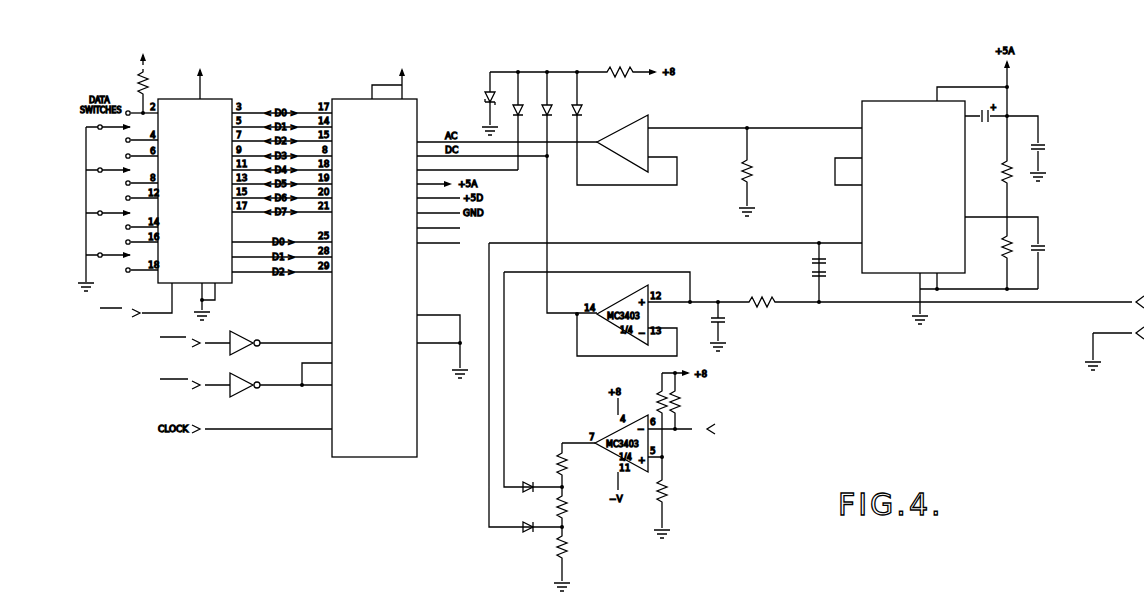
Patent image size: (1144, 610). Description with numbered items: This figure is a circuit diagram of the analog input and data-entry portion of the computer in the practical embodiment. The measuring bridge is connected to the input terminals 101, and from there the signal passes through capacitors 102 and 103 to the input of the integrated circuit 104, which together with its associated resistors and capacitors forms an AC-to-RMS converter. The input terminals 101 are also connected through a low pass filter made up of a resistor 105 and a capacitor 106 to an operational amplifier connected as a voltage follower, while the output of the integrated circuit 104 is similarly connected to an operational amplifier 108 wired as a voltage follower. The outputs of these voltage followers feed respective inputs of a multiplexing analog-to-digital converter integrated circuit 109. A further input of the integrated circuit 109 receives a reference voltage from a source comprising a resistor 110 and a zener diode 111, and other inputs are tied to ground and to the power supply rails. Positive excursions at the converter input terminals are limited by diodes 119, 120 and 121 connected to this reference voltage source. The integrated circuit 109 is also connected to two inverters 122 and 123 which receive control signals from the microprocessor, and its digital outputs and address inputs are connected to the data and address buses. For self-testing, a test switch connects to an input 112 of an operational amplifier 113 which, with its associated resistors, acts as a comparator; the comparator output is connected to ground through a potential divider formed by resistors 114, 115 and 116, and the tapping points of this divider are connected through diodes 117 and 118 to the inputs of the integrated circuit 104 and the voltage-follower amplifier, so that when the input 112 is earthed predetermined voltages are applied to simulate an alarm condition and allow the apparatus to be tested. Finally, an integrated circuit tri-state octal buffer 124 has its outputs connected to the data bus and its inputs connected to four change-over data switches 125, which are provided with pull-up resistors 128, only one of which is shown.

The input terminals 101 is at (1132, 330).
The capacitor 102 is at (812, 261).
The capacitor 103 is at (812, 276).
The integrated circuit 104 is at (891, 108).
The resistor 105 is at (772, 308).
The capacitor 106 is at (728, 325).
The operational amplifier 108 is at (629, 125).
The multiplexing analog-to-digital converter integrated circuit 109 is at (348, 98).
The resistor 110 is at (633, 67).
The zener diode 111 is at (488, 96).
The input 112 is at (690, 432).
The operational amplifier 113 is at (667, 490).
The resistor 114 is at (568, 461).
The resistor 115 is at (572, 508).
The resistor 116 is at (572, 540).
The diode 117 is at (528, 481).
The diode 118 is at (528, 533).
The diode 119 is at (520, 107).
The diode 120 is at (551, 107).
The diode 121 is at (581, 110).
The inverter 122 is at (241, 334).
The inverter 123 is at (242, 376).
The integrated circuit tri-state octal buffer 124 is at (220, 99).
The change-over data switches 125 is at (80, 190).
The pull-up resistors 128 is at (141, 71).